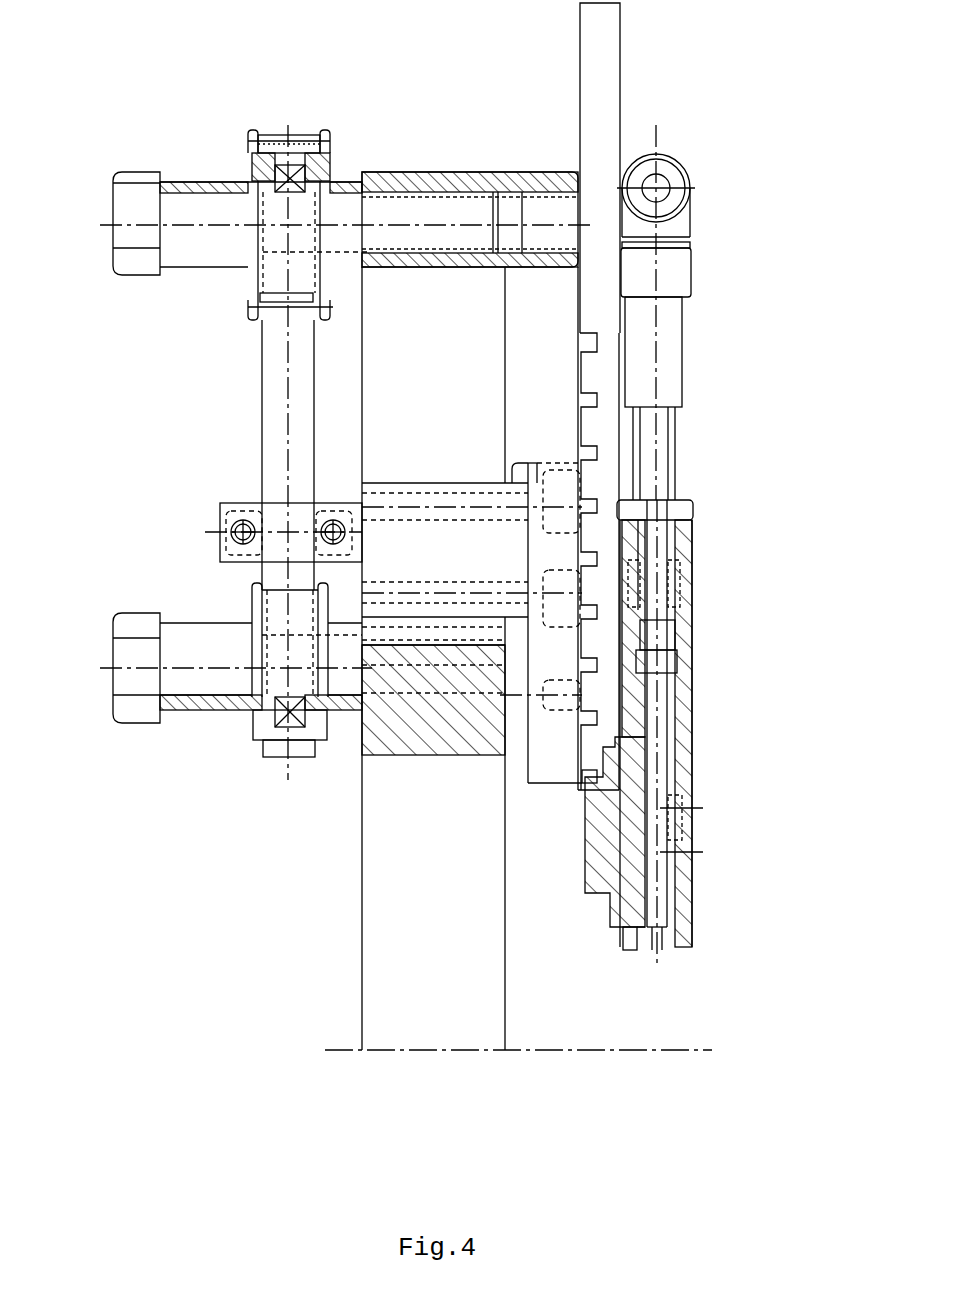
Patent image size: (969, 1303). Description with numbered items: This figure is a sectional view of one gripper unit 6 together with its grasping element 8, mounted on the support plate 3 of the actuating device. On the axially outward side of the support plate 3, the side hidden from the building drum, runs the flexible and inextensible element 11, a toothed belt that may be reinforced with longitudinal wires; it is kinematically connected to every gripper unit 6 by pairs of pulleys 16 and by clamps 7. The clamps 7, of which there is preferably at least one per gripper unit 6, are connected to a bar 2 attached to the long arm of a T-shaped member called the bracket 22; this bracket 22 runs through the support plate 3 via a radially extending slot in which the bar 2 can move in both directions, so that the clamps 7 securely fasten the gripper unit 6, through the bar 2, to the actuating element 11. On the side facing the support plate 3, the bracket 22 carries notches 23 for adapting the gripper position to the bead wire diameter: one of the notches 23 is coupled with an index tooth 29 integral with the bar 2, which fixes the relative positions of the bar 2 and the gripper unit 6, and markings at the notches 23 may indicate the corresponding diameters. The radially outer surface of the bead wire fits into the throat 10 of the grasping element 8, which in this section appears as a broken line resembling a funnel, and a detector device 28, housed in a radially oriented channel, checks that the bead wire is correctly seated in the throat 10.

The bar 2 is at (427, 547).
The support plate 3 is at (385, 927).
The gripper unit 6 is at (690, 470).
The clamp 7 is at (225, 555).
The grasping element 8 is at (680, 893).
The throat 10 is at (665, 945).
The flexible and inextensible element 11 is at (272, 408).
The pulley 16 is at (255, 288).
The bracket 22 is at (595, 100).
The notch 23 is at (588, 395).
The detector device 28 is at (662, 757).
The index tooth 29 is at (583, 783).